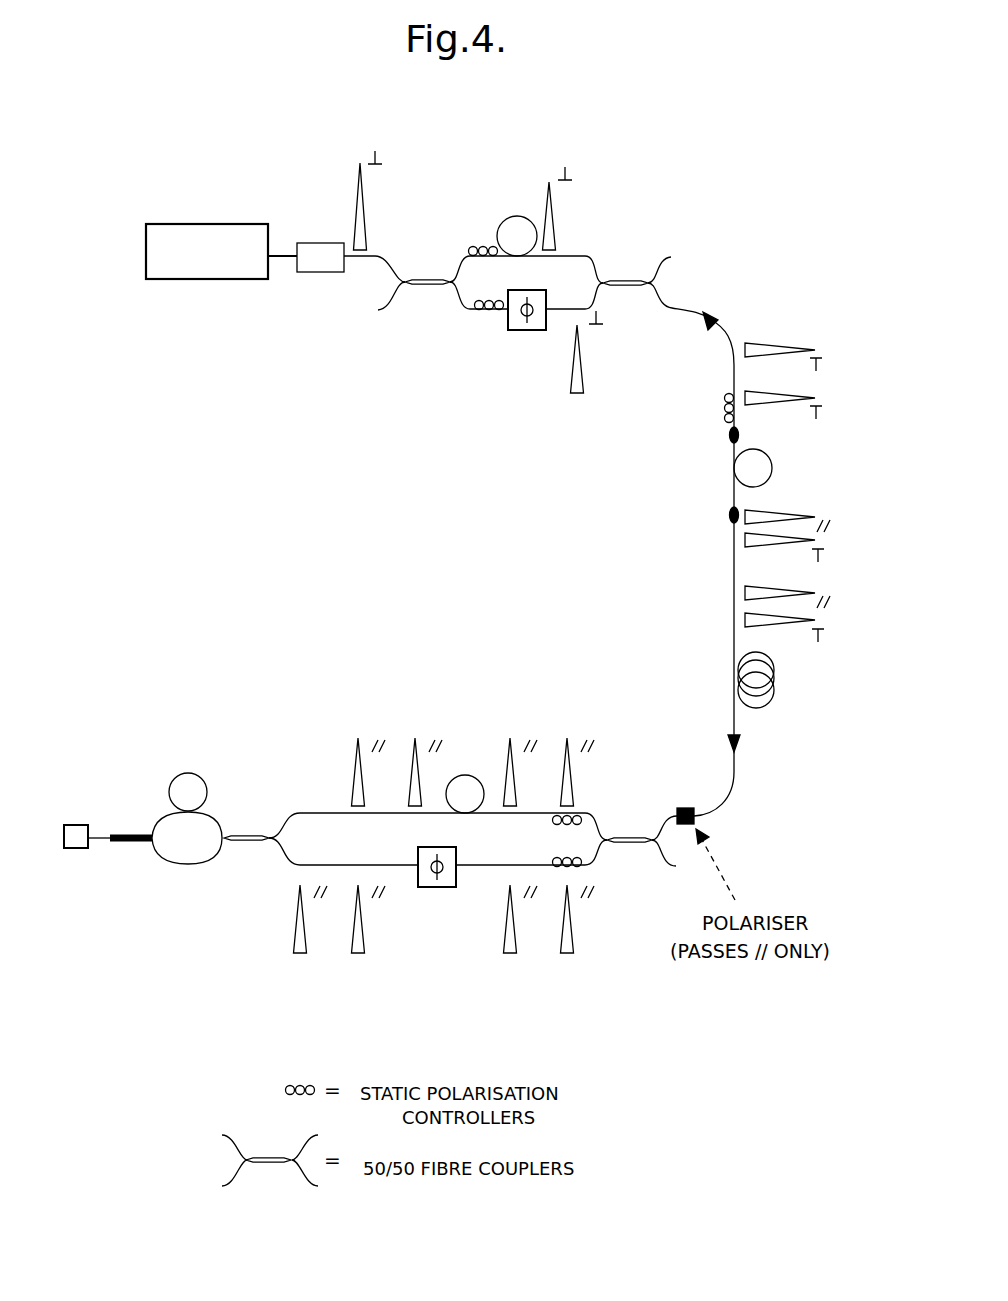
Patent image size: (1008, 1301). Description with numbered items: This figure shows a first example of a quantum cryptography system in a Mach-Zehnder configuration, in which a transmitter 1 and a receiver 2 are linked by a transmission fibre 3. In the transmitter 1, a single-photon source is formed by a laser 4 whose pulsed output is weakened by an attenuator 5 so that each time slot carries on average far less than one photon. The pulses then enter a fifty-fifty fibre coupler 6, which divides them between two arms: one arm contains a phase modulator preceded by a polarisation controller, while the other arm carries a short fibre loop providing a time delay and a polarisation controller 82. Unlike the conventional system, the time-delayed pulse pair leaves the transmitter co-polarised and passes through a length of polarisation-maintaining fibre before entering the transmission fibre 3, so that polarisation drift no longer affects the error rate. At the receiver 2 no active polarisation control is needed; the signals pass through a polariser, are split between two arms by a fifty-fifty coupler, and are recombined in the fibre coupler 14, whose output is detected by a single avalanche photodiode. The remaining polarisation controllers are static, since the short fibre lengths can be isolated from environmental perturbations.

The transmitter 1 is at (440, 189).
The receiver 2 is at (163, 748).
The transmission fibre 3 is at (734, 380).
The laser 4 is at (193, 224).
The attenuator 5 is at (317, 243).
The 50/50 fibre coupler 6 is at (618, 281).
The polarisation controller 82 is at (478, 247).
The fibre coupler 14 is at (130, 845).